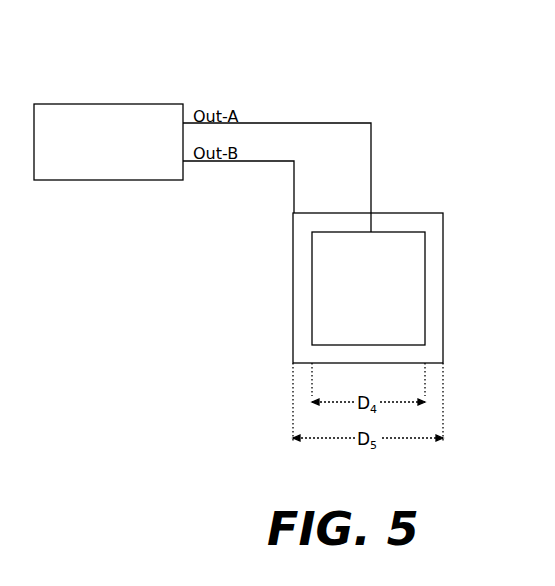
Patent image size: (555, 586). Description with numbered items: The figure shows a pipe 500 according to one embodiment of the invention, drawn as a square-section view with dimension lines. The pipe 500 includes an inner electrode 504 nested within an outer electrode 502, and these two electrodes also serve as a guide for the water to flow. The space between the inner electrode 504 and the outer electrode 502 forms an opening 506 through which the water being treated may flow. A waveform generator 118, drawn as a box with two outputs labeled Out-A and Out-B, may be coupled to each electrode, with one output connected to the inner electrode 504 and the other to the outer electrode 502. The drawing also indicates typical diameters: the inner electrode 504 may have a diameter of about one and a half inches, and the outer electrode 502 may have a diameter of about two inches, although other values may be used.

The pipe 500 is at (103, 66).
The waveform generator 118 is at (168, 104).
The outer electrode 502 is at (443, 283).
The inner electrode 504 is at (388, 288).
The opening 506 is at (433, 235).